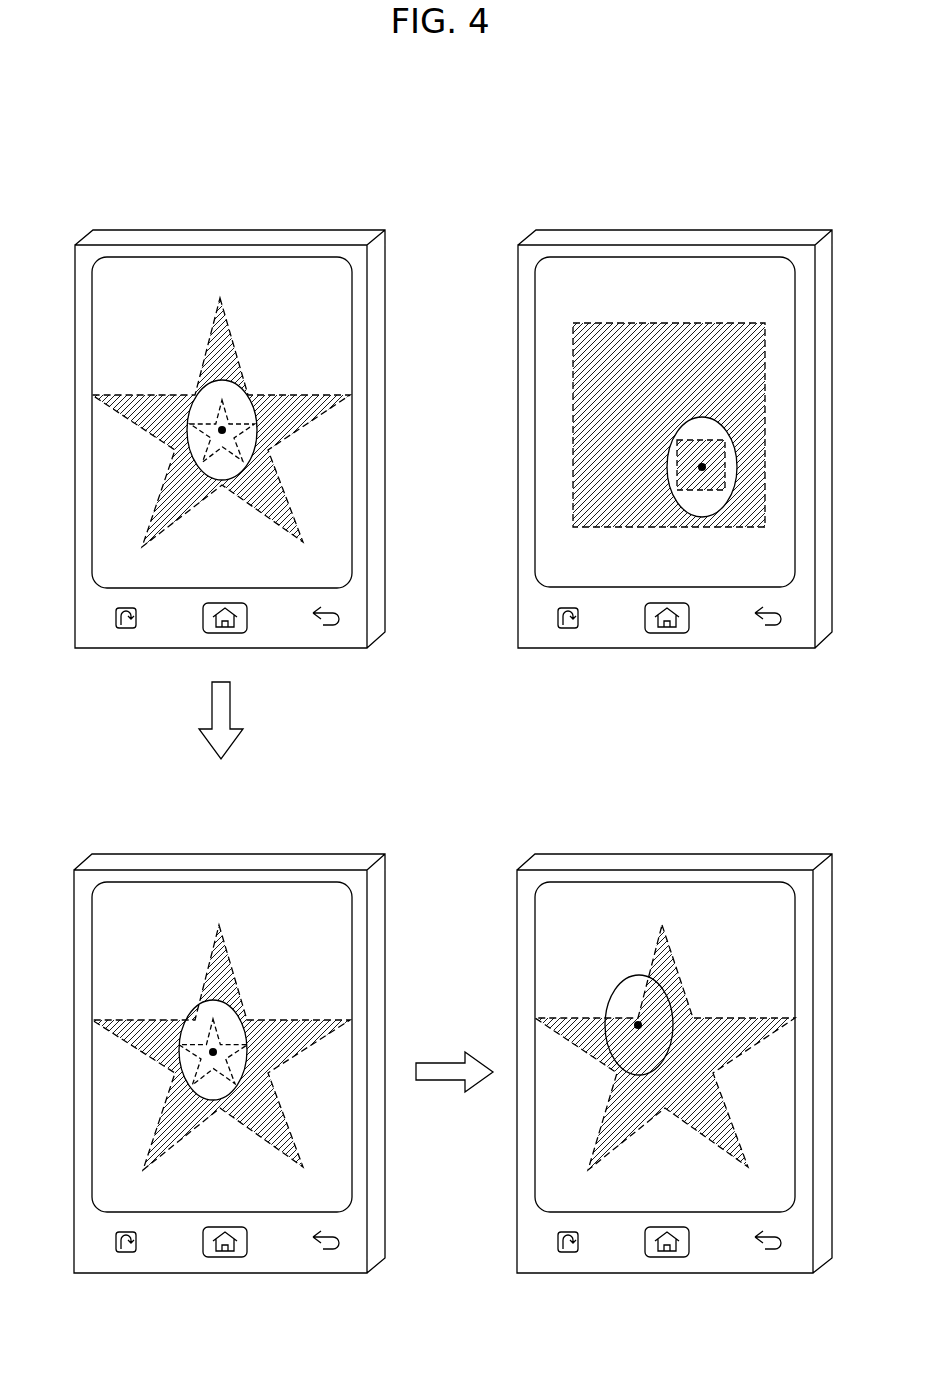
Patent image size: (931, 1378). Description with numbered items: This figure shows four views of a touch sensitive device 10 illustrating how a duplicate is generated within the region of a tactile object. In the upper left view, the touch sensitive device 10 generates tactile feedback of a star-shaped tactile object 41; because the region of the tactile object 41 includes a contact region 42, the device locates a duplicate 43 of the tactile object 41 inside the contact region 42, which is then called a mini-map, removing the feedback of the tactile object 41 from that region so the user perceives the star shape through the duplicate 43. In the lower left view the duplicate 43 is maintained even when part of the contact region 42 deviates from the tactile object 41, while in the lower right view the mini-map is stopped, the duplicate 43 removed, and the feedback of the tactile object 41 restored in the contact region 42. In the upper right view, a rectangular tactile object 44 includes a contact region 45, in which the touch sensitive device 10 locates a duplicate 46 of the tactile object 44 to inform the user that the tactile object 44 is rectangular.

The touch sensitive device 10 is at (256, 243).
The tactile object 41 is at (149, 393).
The contact region 42 is at (240, 386).
The duplicate 43 is at (218, 448).
The tactile object 44 is at (620, 335).
The contact region 45 is at (693, 418).
The duplicate 46 is at (710, 488).